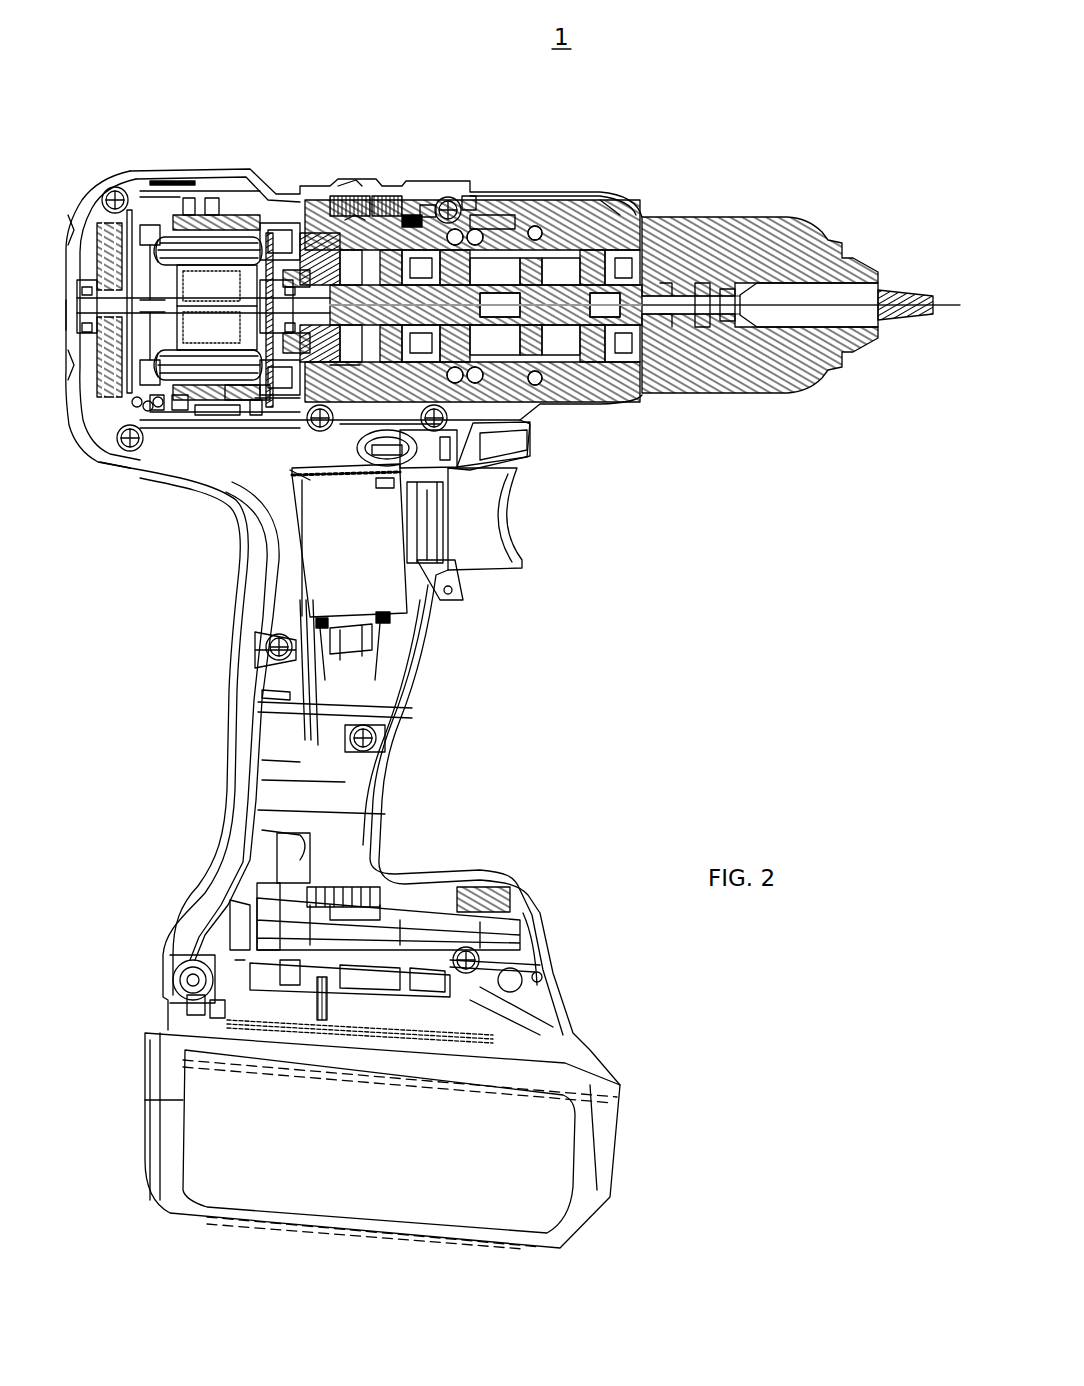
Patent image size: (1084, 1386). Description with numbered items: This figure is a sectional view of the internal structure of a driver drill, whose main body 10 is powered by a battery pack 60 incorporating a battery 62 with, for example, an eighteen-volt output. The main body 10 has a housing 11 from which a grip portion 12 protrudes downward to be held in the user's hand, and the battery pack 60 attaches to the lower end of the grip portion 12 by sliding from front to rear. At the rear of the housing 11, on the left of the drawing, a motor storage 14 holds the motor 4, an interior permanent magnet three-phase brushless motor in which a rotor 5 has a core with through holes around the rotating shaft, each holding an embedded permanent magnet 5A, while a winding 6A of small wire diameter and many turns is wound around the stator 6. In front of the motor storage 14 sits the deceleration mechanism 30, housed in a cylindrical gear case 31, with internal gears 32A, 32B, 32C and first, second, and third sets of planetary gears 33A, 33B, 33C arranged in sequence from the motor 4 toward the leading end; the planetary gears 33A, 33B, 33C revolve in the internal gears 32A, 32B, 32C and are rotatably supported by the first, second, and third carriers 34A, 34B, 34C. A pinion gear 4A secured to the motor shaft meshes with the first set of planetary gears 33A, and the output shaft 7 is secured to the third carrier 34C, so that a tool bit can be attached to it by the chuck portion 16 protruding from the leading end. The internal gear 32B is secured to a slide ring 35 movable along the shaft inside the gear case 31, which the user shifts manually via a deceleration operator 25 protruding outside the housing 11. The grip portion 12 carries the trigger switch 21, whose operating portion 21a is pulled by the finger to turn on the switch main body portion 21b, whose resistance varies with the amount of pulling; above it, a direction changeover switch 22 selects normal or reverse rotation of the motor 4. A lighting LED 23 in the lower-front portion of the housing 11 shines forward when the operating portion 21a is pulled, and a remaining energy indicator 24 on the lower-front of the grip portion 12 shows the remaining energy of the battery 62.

The motor 4 is at (203, 242).
The pinion gear 4A is at (235, 400).
The rotor 5 is at (213, 267).
The permanent magnet 5A is at (235, 268).
The stator 6 is at (187, 247).
The winding 6A is at (170, 240).
The output shaft 7 is at (572, 205).
The main body 10 is at (598, 197).
The housing 11 is at (132, 171).
The grip portion 12 is at (412, 720).
The motor storage 14 is at (130, 468).
The chuck portion 16 is at (805, 388).
The trigger switch 21 is at (503, 569).
The operating portion 21a is at (497, 553).
The switch main body portion 21b is at (385, 596).
The direction changeover switch 22 is at (447, 480).
The lighting LED 23 is at (530, 433).
The remaining energy indicator 24 is at (488, 885).
The deceleration operator 25 is at (342, 186).
The deceleration mechanism 30 is at (619, 215).
The gear case 31 is at (482, 212).
The internal gear 32A is at (333, 192).
The internal gear 32B is at (378, 196).
The internal gear 32C is at (440, 215).
The first set of planetary gears 33A is at (318, 215).
The second set of planetary gears 33B is at (408, 214).
The third set of planetary gears 33C is at (468, 207).
The first carrier 34A is at (275, 412).
The second carrier 34B is at (345, 372).
The third carrier 34C is at (300, 470).
The slide ring 35 is at (350, 216).
The battery pack 60 is at (603, 1138).
The battery 62 is at (478, 1141).